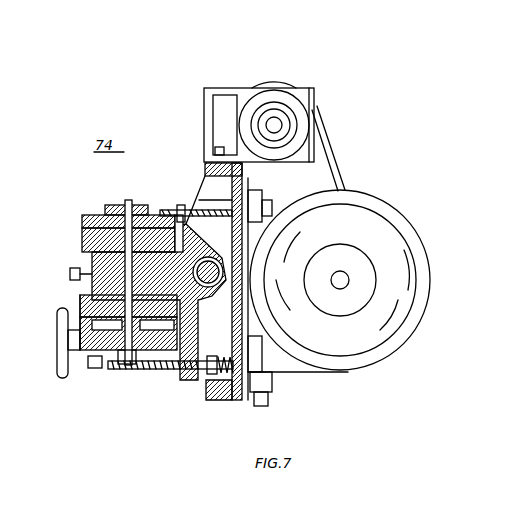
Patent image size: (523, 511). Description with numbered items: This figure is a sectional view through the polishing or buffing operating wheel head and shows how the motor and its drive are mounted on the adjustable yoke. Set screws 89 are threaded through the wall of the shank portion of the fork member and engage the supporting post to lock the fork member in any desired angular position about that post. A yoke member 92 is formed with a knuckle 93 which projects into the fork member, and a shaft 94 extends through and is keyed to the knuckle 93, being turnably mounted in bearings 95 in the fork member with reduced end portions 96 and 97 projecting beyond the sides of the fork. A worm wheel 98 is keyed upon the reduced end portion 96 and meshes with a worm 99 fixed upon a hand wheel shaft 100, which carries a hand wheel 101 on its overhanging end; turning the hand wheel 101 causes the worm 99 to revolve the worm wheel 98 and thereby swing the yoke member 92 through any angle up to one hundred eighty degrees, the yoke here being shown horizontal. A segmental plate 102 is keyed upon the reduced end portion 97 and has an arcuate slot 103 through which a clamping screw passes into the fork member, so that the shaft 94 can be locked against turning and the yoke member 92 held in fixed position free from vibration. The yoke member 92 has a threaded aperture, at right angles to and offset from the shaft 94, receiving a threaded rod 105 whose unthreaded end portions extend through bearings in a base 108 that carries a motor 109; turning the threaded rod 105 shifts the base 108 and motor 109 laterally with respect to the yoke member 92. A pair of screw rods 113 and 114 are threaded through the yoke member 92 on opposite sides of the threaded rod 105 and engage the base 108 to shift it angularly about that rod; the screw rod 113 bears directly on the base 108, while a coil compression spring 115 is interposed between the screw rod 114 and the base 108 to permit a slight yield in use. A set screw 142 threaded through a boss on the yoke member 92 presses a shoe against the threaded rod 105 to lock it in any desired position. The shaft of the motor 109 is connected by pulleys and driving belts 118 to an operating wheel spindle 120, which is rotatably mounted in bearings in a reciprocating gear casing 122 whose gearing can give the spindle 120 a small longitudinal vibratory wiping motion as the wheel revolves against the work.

The set screws 89 is at (70, 274).
The yoke member 92 is at (183, 206).
The knuckle 93 is at (95, 290).
The shaft 94 is at (100, 243).
The bearings 95 is at (95, 250).
The reduced end portion 96 is at (104, 370).
The reduced end portion 97 is at (126, 205).
The worm wheel 98 is at (84, 360).
The worm 99 is at (134, 368).
The hand wheel shaft 100 is at (57, 345).
The hand wheel 101 is at (68, 348).
The segmental plate 102 is at (84, 230).
The arcuate slot 103 is at (95, 216).
The threaded rod 105 is at (250, 312).
The base 108 is at (200, 164).
The motor 109 is at (366, 196).
The screw rod 113 is at (176, 214).
The screw rod 114 is at (150, 374).
The coil compression spring 115 is at (218, 376).
The driving belts 118 is at (334, 164).
The operating wheel spindle 120 is at (280, 120).
The reciprocating gear casing 122 is at (315, 96).
The set screw 142 is at (200, 310).